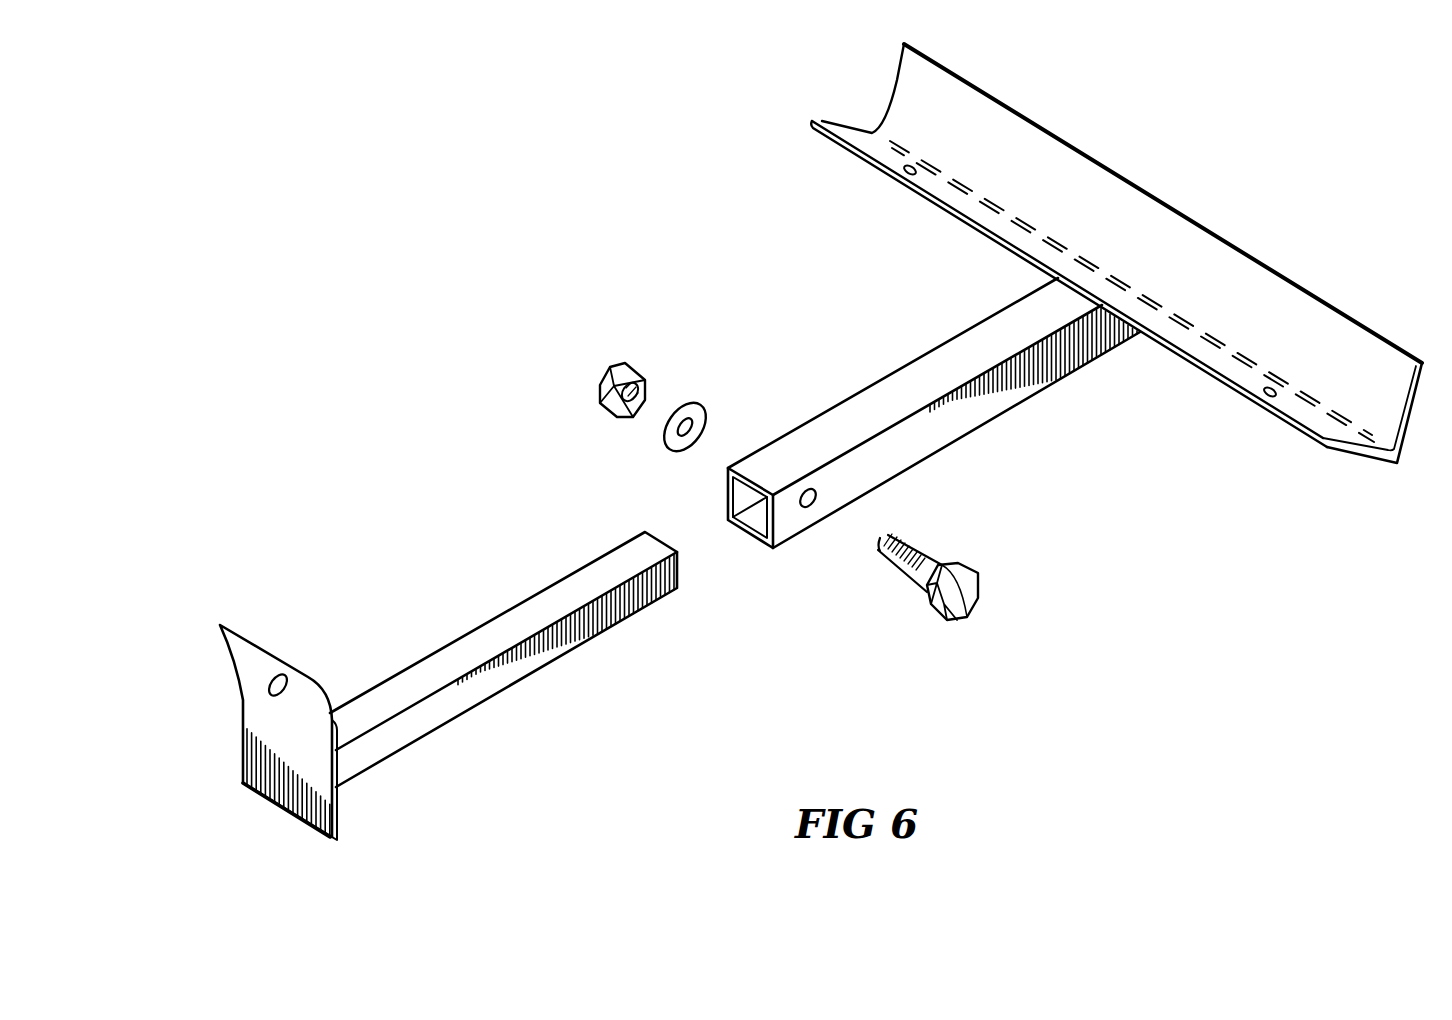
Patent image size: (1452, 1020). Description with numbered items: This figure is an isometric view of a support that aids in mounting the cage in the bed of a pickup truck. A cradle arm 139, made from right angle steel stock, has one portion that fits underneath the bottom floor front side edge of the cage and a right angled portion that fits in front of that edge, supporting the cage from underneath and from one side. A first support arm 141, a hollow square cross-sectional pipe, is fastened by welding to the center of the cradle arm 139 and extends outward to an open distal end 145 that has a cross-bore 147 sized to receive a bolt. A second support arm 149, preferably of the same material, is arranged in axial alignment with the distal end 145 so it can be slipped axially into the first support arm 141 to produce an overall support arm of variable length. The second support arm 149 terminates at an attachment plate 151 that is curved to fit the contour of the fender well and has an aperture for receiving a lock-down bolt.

The cradle arm 139 is at (883, 168).
The first support arm 141 is at (935, 363).
The distal end 145 is at (727, 488).
The cross-bore 147 is at (811, 508).
The second support arm 149 is at (553, 590).
The attachment plate 151 is at (253, 687).